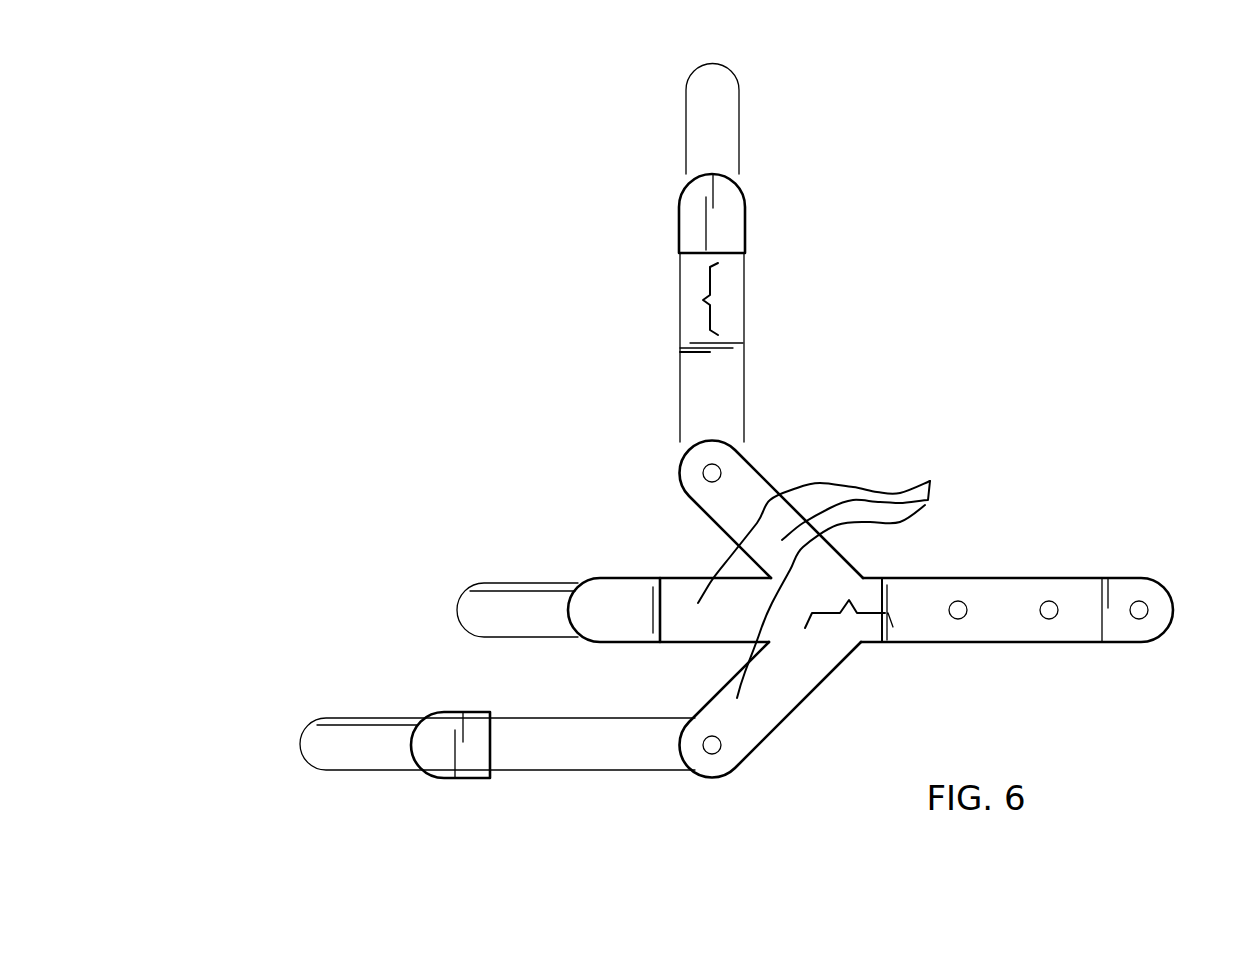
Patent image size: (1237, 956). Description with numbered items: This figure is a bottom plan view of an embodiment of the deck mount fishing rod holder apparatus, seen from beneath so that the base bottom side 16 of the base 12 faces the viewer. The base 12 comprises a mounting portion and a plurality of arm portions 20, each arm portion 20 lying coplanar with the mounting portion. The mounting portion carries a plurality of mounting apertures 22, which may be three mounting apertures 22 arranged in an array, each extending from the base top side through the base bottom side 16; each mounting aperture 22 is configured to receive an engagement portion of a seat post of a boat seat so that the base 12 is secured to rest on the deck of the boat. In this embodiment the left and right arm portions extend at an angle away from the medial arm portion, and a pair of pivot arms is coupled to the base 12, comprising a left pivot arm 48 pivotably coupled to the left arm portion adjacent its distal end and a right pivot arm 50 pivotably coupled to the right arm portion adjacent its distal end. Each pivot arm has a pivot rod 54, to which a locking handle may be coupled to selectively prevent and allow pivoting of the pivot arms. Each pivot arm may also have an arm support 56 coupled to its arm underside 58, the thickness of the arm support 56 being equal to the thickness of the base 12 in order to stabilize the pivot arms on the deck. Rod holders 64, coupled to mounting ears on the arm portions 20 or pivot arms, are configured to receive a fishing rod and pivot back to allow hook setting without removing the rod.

The base 12 is at (905, 643).
The base bottom side 16 is at (850, 600).
The arm portions 20 is at (824, 566).
The mounting apertures 22 is at (958, 603).
The left pivot arm 48 is at (725, 362).
The right pivot arm 50 is at (770, 708).
The pivot rod 54 is at (715, 468).
The arm support 56 is at (730, 222).
The arm underside 58 is at (703, 300).
The rod holders 64 is at (720, 122).